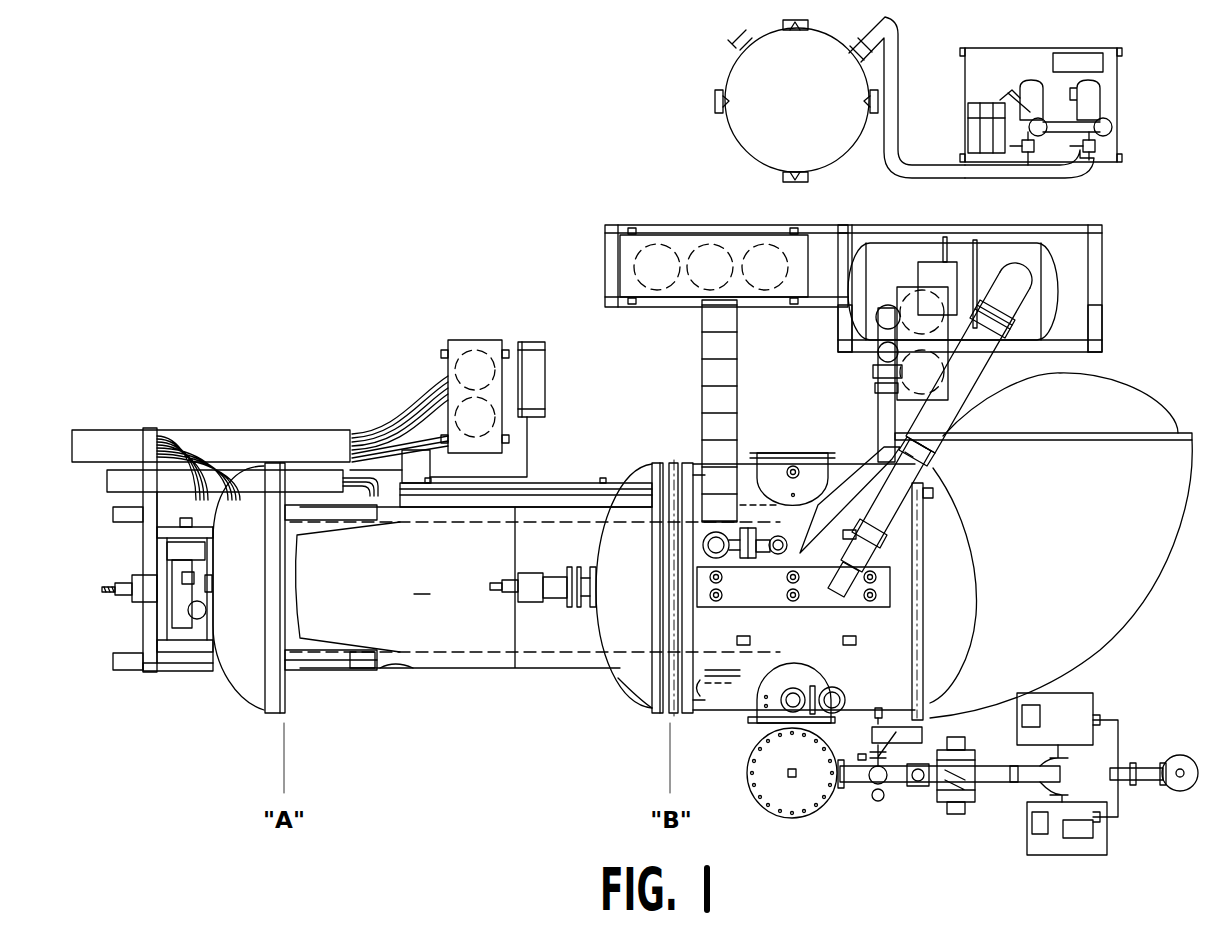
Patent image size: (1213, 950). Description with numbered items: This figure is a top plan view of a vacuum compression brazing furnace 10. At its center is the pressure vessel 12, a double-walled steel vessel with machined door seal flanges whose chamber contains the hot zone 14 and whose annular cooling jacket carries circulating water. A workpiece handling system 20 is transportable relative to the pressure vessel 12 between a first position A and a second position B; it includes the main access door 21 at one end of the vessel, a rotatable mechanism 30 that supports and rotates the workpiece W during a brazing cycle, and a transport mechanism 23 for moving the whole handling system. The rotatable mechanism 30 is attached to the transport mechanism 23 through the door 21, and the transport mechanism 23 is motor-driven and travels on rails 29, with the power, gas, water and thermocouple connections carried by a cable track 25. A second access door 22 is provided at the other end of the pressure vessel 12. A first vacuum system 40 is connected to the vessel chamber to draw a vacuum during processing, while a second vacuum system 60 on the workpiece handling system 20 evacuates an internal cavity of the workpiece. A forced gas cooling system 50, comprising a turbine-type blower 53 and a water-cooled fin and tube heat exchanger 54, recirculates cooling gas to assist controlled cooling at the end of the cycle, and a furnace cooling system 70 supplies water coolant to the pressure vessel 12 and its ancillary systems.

The vacuum compression brazing furnace 10 is at (495, 778).
The pressure vessel 12 is at (713, 712).
The hot zone 14 is at (633, 708).
The workpiece handling system 20 is at (196, 681).
The main access door 21 is at (273, 682).
The second access door 22 is at (957, 518).
The transport mechanism 23 is at (147, 637).
The cable track 25 is at (282, 443).
The rails 29 is at (563, 670).
The rotatable mechanism 30 is at (552, 583).
The first vacuum system 40 is at (974, 818).
The forced gas cooling system 50 is at (866, 373).
The turbine-type blower 53 is at (920, 258).
The fin and tube heat exchanger 54 is at (1005, 255).
The second vacuum system 60 is at (160, 572).
The furnace cooling system 70 is at (858, 181).